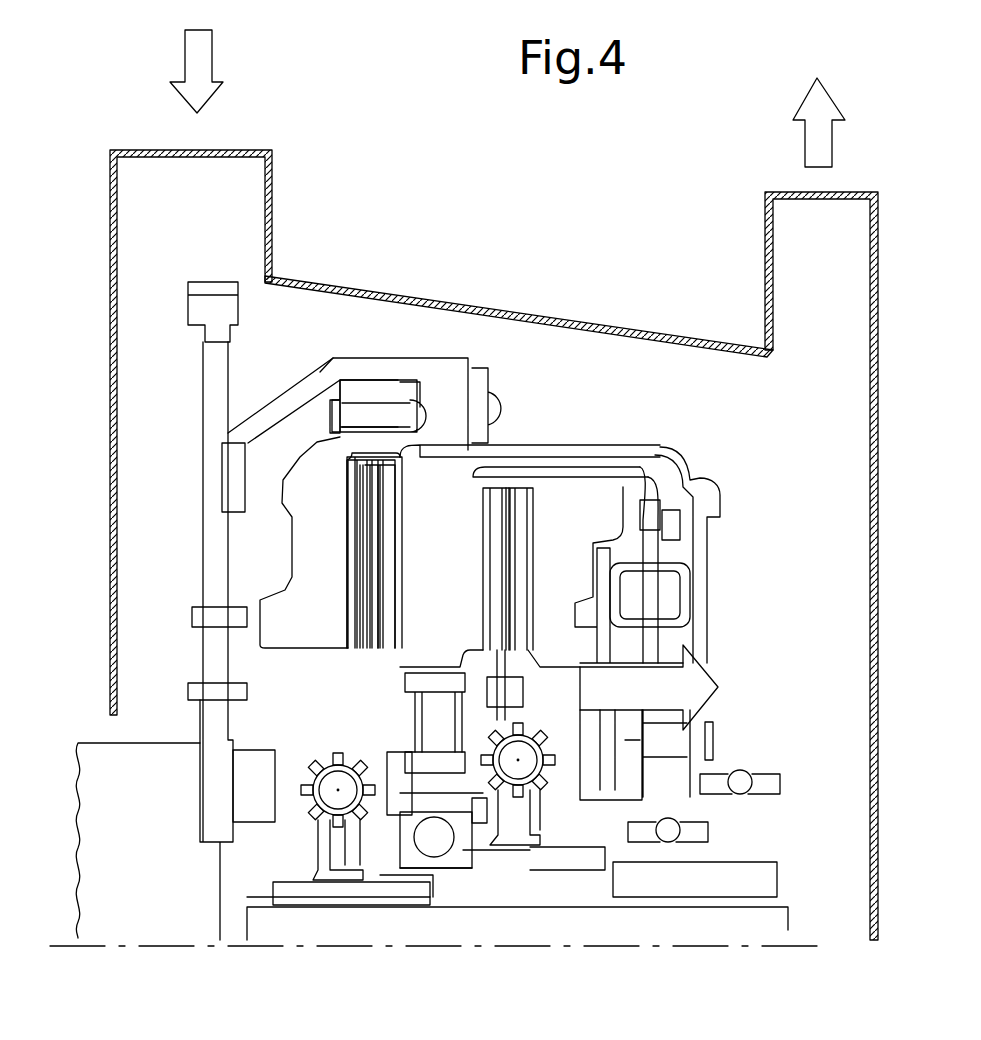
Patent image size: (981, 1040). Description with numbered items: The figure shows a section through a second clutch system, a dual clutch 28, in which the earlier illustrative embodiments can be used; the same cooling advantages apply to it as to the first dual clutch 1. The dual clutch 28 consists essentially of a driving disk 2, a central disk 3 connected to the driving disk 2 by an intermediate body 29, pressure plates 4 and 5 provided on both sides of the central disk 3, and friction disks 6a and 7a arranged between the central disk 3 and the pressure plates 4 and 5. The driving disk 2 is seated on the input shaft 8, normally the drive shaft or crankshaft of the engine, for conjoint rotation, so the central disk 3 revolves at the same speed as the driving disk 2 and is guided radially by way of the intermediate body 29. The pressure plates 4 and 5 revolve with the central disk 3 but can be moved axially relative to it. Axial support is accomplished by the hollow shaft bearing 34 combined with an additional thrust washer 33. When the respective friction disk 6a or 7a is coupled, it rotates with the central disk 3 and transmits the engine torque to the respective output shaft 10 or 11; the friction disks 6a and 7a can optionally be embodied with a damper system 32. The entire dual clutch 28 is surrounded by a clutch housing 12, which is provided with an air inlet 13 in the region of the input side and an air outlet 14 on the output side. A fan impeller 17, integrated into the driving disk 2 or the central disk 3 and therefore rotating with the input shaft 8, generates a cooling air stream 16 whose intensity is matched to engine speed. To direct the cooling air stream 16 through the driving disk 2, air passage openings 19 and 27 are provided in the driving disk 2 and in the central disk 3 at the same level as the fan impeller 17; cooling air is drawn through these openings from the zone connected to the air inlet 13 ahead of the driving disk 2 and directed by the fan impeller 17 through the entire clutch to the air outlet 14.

The dual clutch 1 is at (612, 380).
The driving disk 2 is at (215, 398).
The central disk 3 is at (397, 552).
The pressure plate 4 is at (355, 554).
The pressure plate 5 is at (525, 604).
The friction disk 6a is at (375, 515).
The friction disk 7a is at (522, 530).
The input shaft 8 is at (140, 917).
The output shaft 10 is at (400, 928).
The output shaft 11 is at (552, 887).
The clutch housing 12 is at (552, 318).
The air inlet 13 is at (212, 178).
The air outlet 14 is at (792, 208).
The cooling air stream 16 is at (677, 683).
The fan impeller 17 is at (200, 617).
The air passage opening 19 is at (192, 693).
The air passage opening 27 is at (448, 785).
The dual clutch 28 is at (627, 448).
The intermediate body 29 is at (292, 397).
The damper system 32 is at (307, 815).
The thrust washer 33 is at (427, 803).
The hollow shaft bearing 34 is at (450, 882).